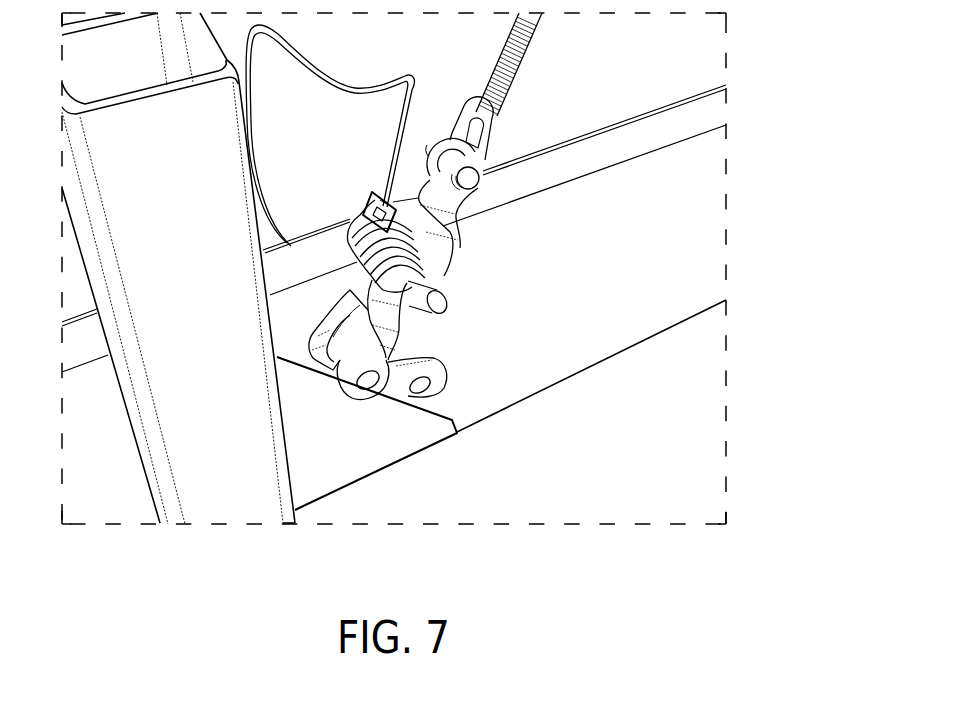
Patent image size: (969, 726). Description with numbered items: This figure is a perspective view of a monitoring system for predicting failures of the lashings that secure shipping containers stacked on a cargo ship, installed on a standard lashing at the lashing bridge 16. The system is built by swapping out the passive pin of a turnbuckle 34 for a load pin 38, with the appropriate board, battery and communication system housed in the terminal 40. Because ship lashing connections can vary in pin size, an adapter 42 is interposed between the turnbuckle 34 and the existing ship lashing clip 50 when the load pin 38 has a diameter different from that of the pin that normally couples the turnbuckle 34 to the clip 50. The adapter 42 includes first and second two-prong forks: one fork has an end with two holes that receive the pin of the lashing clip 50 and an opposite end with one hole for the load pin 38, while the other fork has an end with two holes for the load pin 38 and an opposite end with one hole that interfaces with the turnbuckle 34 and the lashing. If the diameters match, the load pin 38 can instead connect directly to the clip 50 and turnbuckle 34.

The lashing bridge 16 is at (665, 229).
The turnbuckle 34 is at (503, 55).
The load pin 38 is at (443, 378).
The terminal 40 is at (344, 215).
The adapter 42 is at (447, 223).
The ship lashing clip 50 is at (340, 378).